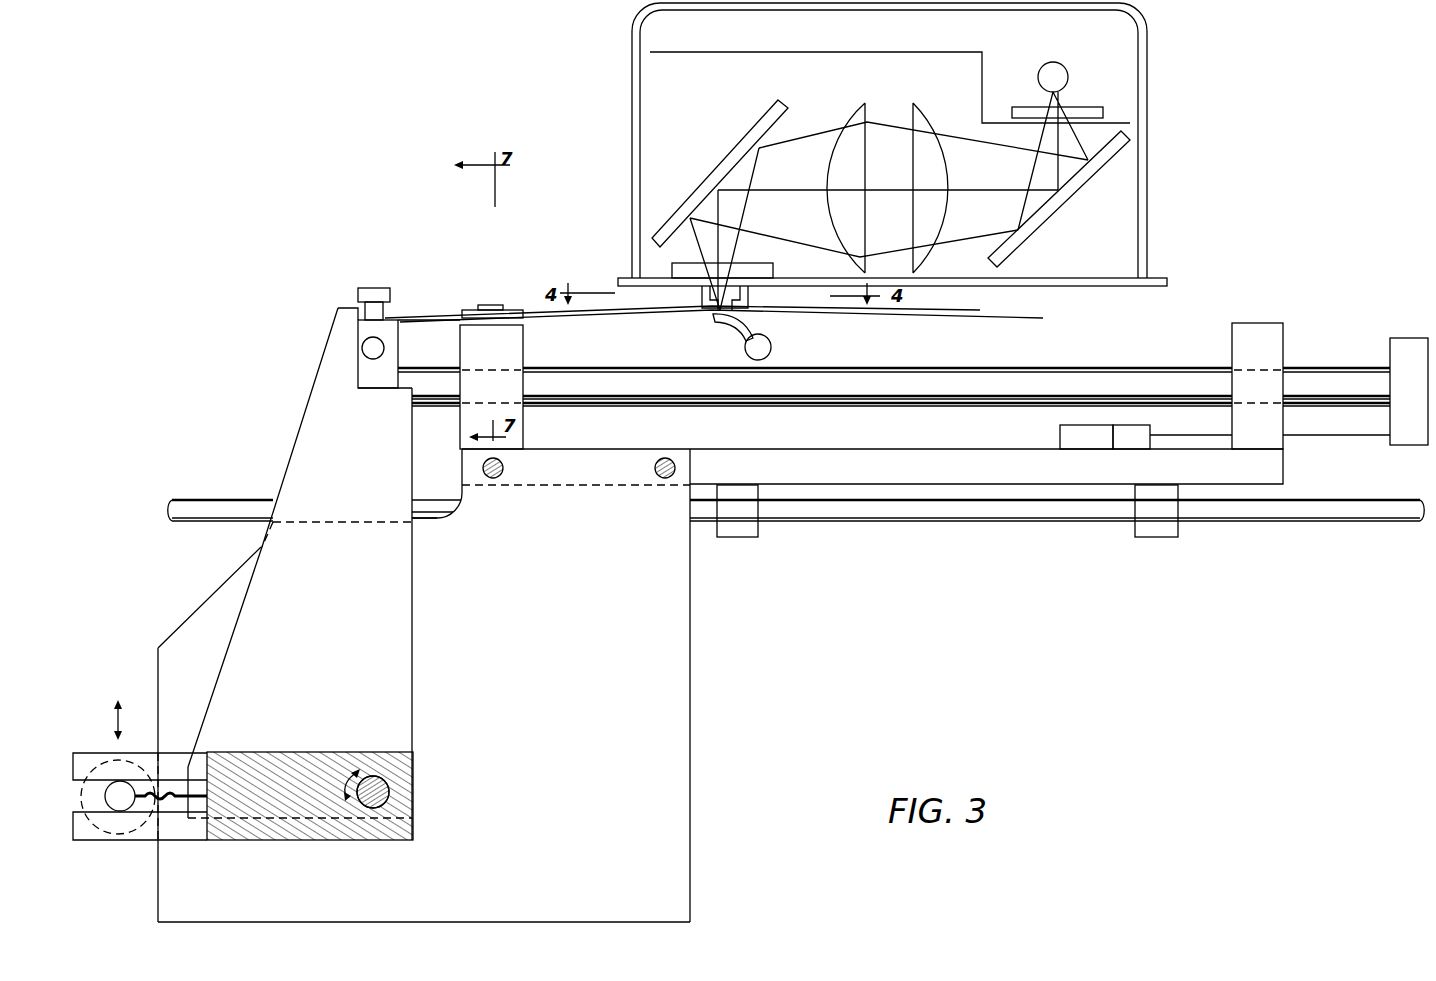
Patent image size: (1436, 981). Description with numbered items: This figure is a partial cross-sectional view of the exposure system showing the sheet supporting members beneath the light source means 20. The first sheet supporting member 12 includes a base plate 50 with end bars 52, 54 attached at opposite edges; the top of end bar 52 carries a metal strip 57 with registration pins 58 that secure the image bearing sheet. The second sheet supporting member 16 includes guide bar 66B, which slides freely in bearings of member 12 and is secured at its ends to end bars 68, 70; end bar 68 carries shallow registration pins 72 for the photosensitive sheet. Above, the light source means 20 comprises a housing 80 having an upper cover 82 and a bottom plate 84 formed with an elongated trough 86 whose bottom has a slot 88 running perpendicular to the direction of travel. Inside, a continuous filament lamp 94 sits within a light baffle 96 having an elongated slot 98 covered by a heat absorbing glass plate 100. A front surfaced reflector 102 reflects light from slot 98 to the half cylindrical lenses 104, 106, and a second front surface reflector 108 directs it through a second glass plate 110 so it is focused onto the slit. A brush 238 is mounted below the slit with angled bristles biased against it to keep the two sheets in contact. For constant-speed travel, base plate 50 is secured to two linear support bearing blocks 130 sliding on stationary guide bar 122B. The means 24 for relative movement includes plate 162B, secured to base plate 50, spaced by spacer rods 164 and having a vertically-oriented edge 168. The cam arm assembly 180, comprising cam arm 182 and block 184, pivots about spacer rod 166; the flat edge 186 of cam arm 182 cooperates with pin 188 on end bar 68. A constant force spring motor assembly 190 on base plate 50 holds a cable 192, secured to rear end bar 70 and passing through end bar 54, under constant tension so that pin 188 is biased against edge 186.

The first sheet supporting member 12 is at (456, 336).
The second sheet supporting member 16 is at (372, 328).
The light source means 20 is at (1153, 47).
The means for moving the members relative to one another 24 is at (189, 551).
The base plate 50 is at (944, 447).
The end bar 52 is at (514, 355).
The end bar 54 is at (1250, 323).
The metal strip 57 is at (468, 308).
The registration pins 58 is at (497, 305).
The guide bar 66B is at (1045, 366).
The end bar 68 is at (396, 353).
The end bar 70 is at (1418, 338).
The registration pins 72 is at (382, 283).
The housing 80 is at (891, 140).
The upper cover 82 is at (1147, 132).
The bottom plate 84 is at (1113, 289).
The elongated trough 86 is at (752, 292).
The slot 88 is at (712, 317).
The continuous filament lamp 94 is at (1065, 67).
The light baffle 96 is at (668, 51).
The elongated slot 98 is at (1035, 142).
The heat absorbing glass plate 100 is at (1027, 106).
The front surfaced reflector 102 is at (1056, 217).
The half cylindrical lens 104 is at (947, 170).
The half cylindrical lens 106 is at (818, 201).
The second front surface reflector 108 is at (688, 196).
The second glass plate 110 is at (771, 264).
The guide bar 122B is at (1337, 524).
The linear support bearing blocks 130 is at (755, 537).
The plate 162B is at (691, 791).
The spacer rods 164 is at (655, 465).
The spacer rod 166 is at (390, 789).
The vertically-oriented edge 168 is at (158, 667).
The cam arm assembly 180 is at (419, 670).
The cam arm 182 is at (355, 618).
The block 184 is at (352, 752).
The flat edge 186 is at (367, 372).
The pin 188 is at (365, 347).
The constant force spring motor assembly 190 is at (1135, 425).
The wire or cable 192 is at (1320, 436).
The brush 238 is at (772, 348).